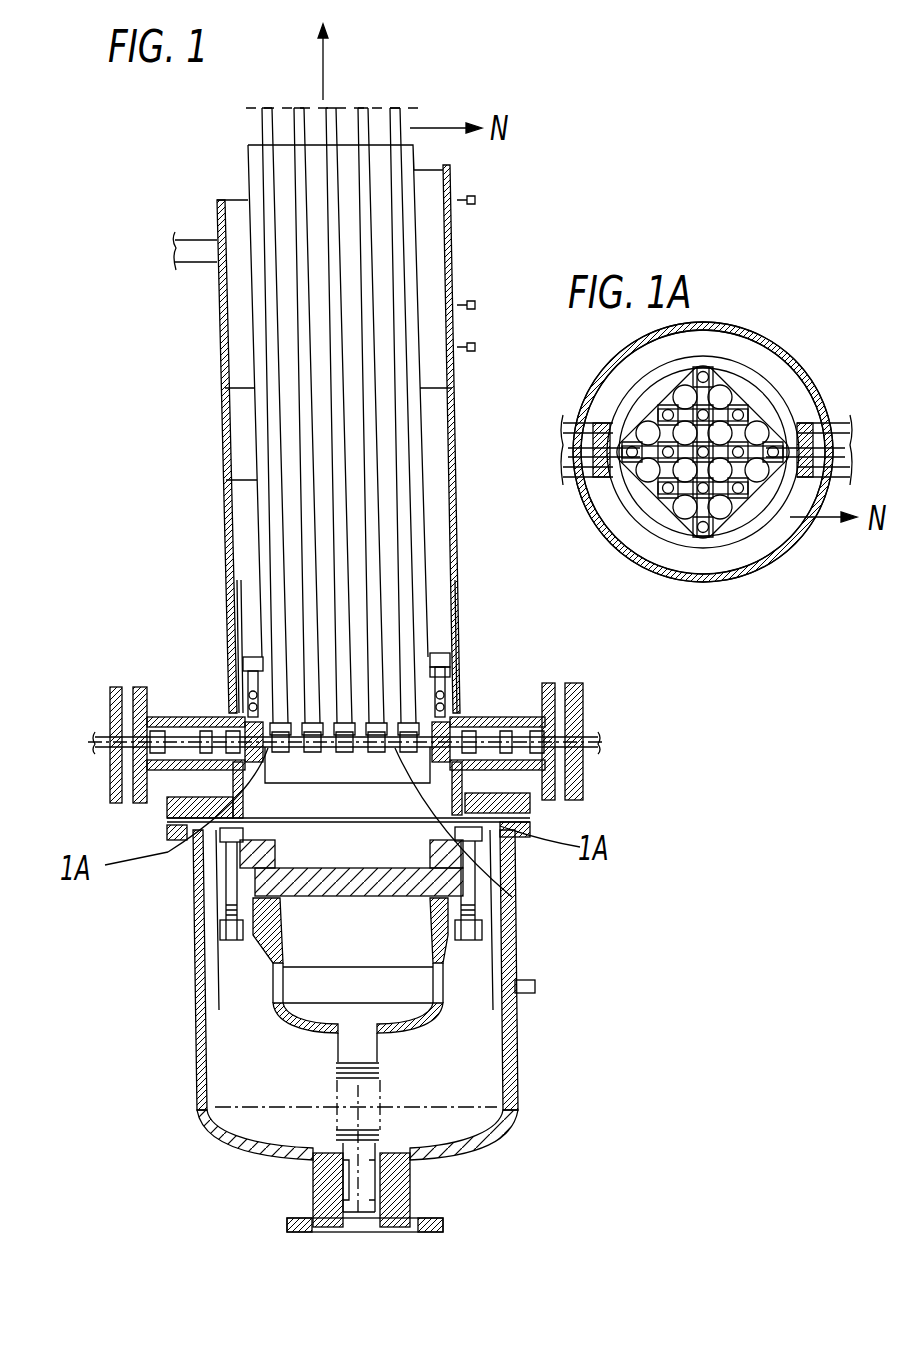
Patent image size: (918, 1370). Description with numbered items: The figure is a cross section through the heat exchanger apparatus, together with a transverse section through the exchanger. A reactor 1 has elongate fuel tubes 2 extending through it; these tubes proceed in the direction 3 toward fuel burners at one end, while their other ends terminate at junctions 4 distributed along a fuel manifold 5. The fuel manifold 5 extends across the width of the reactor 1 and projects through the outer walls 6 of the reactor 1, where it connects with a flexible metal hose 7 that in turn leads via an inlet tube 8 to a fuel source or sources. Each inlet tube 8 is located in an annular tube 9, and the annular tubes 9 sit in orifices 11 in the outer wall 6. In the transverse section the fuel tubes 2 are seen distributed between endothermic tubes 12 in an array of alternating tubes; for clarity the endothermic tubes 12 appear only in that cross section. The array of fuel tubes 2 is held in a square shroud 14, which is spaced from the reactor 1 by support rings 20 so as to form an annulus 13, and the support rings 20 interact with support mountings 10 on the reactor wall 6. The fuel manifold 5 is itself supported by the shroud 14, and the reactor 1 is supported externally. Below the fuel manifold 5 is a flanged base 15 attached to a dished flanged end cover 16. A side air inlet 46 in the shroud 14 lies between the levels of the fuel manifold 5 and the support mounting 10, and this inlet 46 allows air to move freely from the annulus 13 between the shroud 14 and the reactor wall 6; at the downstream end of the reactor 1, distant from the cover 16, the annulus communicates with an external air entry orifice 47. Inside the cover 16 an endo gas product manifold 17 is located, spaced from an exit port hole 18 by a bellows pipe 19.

In FIG. 1, the reactor 1 is at (220, 340).
In FIG. 1, the fuel tubes 2 is at (262, 128).
In FIG. 1A, the fuel tubes 2 is at (713, 363).
In FIG. 1, the direction 3 is at (322, 50).
In FIG. 1, the junctions 4 is at (200, 882).
In FIG. 1, the fuel manifold 5 is at (483, 862).
In FIG. 1, the outer walls 6 is at (460, 576).
In FIG. 1, the flexible metal hose 7 is at (197, 755).
In FIG. 1, the inlet tube 8 is at (590, 735).
In FIG. 1, the annular tubes 9 is at (163, 710).
In FIG. 1, the support mountings 10 is at (462, 668).
In FIG. 1, the orifices 11 is at (462, 715).
In FIG. 1A, the endothermic tubes 12 is at (743, 397).
In FIG. 1, the annulus 13 is at (245, 578).
In FIG. 1, the square shroud 14 is at (257, 480).
In FIG. 1A, the square shroud 14 is at (653, 397).
In FIG. 1, the flanged base 15 is at (530, 805).
In FIG. 1, the dished flanged end cover 16 is at (515, 940).
In FIG. 1, the endo gas product manifold 17 is at (270, 932).
In FIG. 1, the exit port hole 18 is at (292, 1158).
In FIG. 1, the bellows pipe 19 is at (383, 1103).
In FIG. 1, the support rings 20 is at (460, 665).
In FIG. 1, the side air inlet 46 is at (258, 707).
In FIG. 1, the external air entry orifice 47 is at (213, 253).